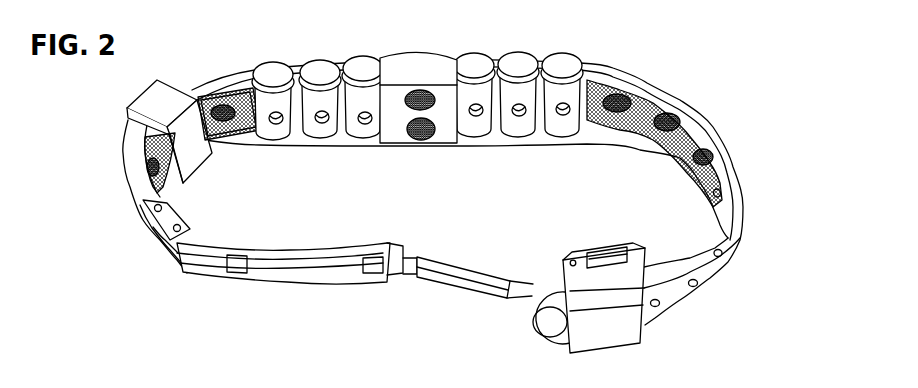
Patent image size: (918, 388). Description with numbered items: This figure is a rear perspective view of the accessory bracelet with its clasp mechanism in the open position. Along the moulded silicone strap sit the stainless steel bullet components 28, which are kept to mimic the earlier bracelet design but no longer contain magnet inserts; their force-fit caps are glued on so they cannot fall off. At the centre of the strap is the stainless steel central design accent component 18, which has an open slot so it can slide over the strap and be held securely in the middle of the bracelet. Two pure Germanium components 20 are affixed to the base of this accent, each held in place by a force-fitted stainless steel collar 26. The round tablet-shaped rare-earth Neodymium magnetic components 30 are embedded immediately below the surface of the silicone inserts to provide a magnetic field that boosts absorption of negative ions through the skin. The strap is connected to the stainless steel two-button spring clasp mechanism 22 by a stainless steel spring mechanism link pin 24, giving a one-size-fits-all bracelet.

The central design accent component 18 is at (411, 126).
The pure Germanium components 20 is at (390, 145).
The two-button spring clasp mechanism 22 is at (275, 286).
The spring mechanism link pin 24 is at (173, 236).
The force-fitted stainless steel collar 26 is at (428, 143).
The stainless steel bullet components 28 is at (362, 62).
The rare-earth Neodymium magnetic components 30 is at (223, 99).